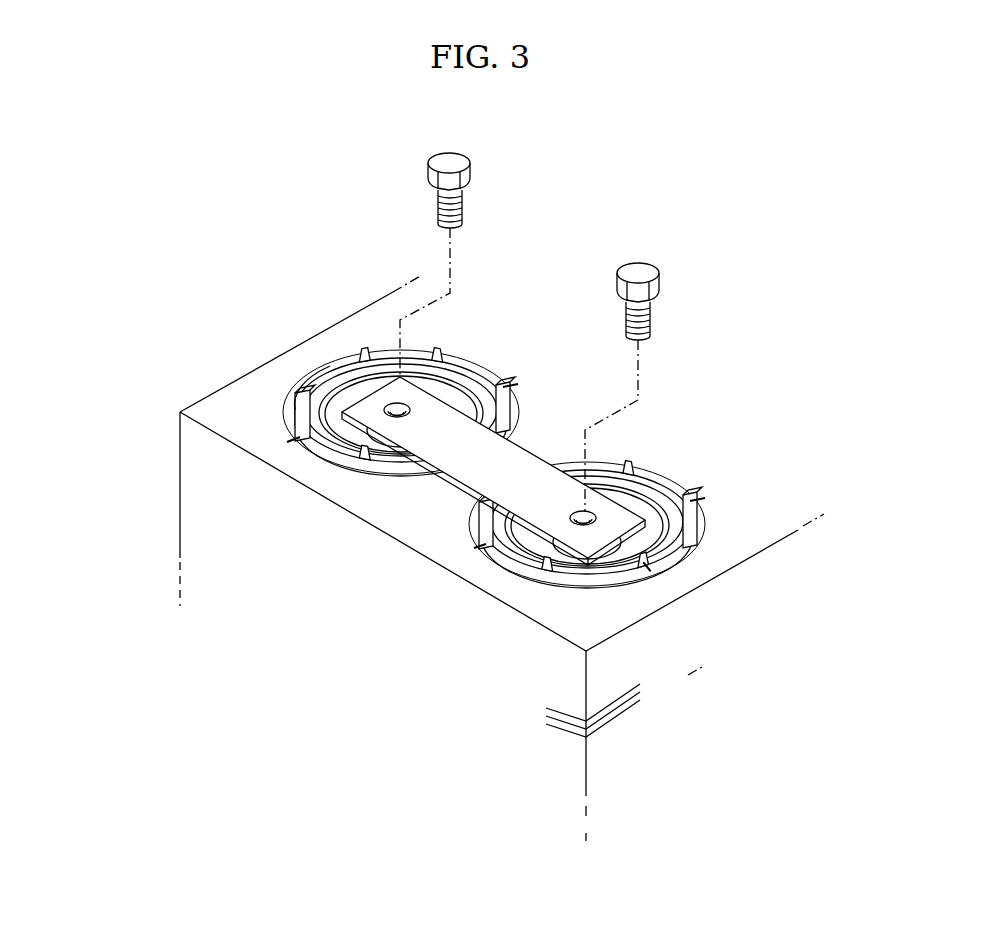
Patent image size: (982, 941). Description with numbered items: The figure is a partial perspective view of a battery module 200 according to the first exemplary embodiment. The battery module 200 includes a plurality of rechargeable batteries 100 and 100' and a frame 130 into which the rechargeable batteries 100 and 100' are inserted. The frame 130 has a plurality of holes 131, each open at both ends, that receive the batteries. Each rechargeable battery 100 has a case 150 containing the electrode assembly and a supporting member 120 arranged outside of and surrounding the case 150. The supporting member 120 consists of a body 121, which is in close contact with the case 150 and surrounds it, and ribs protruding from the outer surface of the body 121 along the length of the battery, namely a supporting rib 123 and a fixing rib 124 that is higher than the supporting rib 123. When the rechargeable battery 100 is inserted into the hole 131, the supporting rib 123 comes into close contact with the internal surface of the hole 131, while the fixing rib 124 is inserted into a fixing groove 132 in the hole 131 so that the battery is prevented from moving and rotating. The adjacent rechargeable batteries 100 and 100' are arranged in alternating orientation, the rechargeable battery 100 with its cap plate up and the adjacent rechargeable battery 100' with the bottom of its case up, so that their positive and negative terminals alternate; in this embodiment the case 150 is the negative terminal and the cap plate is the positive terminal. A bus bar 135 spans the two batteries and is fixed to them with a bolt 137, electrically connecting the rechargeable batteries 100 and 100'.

The rechargeable battery 100 is at (394, 469).
The adjacent rechargeable battery 100' is at (578, 583).
The supporting member 120 is at (480, 516).
The body 121 is at (318, 372).
The supporting rib 123 is at (300, 387).
The fixing rib 124 is at (500, 378).
The frame 130 is at (736, 545).
The hole 131 is at (514, 394).
The fixing groove 132 is at (700, 500).
The bus bar 135 is at (473, 419).
The bolt 137 is at (470, 172).
The case 150 is at (350, 397).
The battery module 200 is at (477, 558).